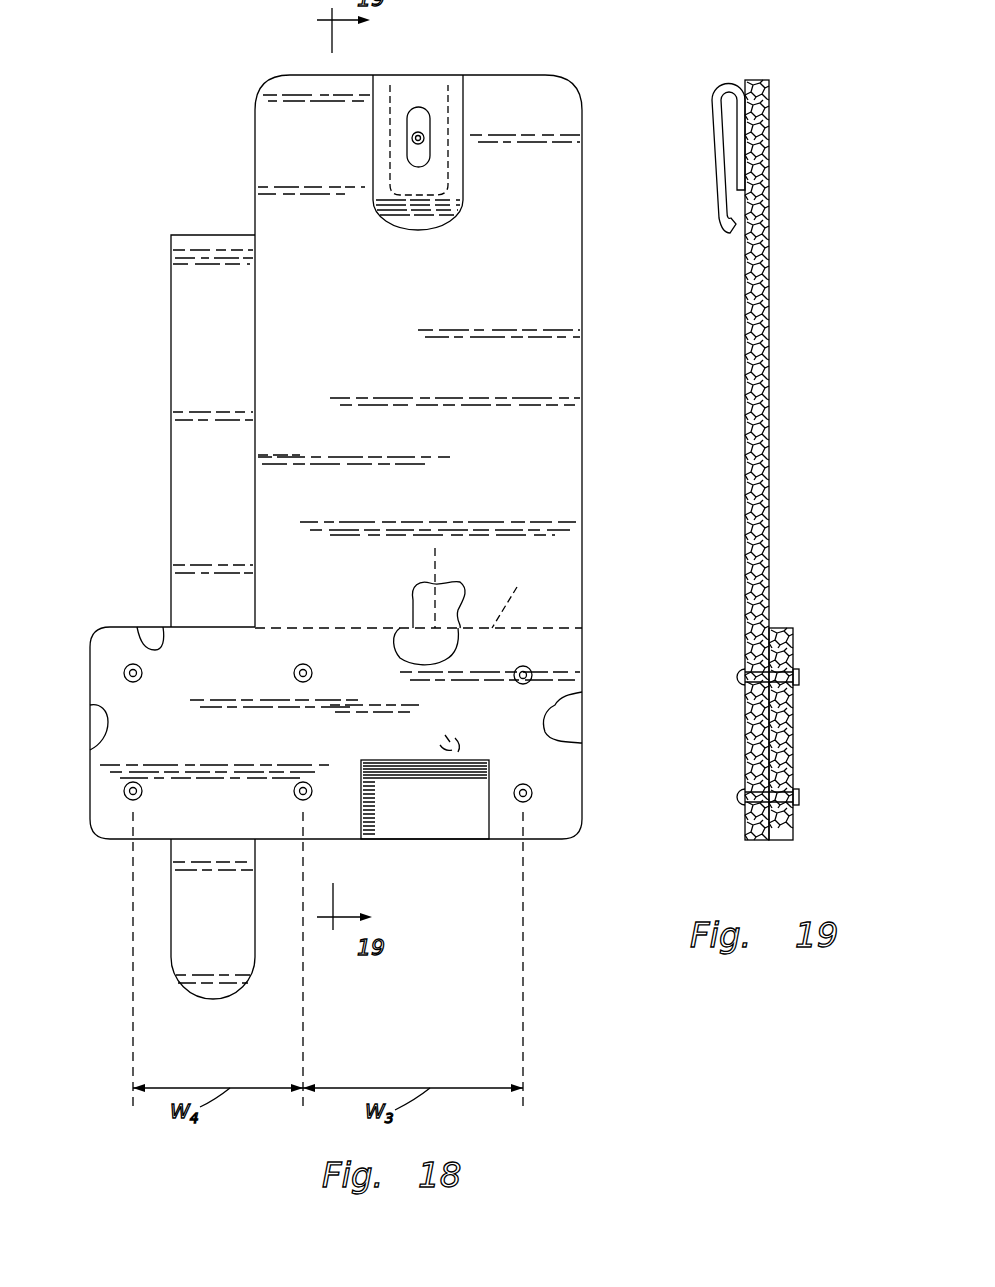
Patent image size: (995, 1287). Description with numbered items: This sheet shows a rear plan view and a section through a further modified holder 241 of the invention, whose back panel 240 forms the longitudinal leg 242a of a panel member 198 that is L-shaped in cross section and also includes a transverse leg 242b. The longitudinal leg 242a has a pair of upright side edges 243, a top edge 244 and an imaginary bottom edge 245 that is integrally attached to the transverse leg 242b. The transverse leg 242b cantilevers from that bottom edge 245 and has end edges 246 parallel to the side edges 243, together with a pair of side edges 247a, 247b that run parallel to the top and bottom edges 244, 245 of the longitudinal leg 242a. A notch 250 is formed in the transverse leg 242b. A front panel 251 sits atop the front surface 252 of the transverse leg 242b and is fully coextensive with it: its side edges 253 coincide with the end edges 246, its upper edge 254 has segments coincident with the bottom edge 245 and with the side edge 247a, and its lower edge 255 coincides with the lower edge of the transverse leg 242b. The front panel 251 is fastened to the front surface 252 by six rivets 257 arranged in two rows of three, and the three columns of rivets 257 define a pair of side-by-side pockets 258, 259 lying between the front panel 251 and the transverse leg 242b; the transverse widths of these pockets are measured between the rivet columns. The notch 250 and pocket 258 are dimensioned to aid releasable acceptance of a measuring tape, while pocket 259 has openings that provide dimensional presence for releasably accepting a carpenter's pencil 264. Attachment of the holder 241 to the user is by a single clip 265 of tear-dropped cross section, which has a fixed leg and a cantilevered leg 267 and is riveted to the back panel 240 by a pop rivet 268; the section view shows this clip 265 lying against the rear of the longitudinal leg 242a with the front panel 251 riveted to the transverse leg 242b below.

In FIG. 18, the panel member 198 is at (595, 827).
In FIG. 18, the back panel 240 is at (516, 74).
In FIG. 18, the modified holder 241 is at (598, 82).
In FIG. 18, the longitudinal leg 242a is at (584, 251).
In FIG. 19, the longitudinal leg 242a is at (772, 216).
In FIG. 18, the transverse leg 242b is at (100, 627).
In FIG. 19, the transverse leg 242b is at (745, 705).
In FIG. 18, the side edges 243 is at (255, 186).
In FIG. 18, the top edge 244 is at (300, 76).
In FIG. 18, the bottom edge 245 is at (375, 900).
In FIG. 19, the bottom edge 245 is at (770, 625).
In FIG. 18, the end edges 246 is at (90, 762).
In FIG. 18, the side edge 247a is at (207, 627).
In FIG. 18, the side edge 247b is at (122, 843).
In FIG. 18, the notch 250 is at (490, 803).
In FIG. 18, the front panel 251 is at (436, 646).
In FIG. 19, the front panel 251 is at (790, 846).
In FIG. 18, the front surface 252 is at (382, 758).
In FIG. 19, the front surface 252 is at (793, 652).
In FIG. 18, the side edges 253 is at (90, 712).
In FIG. 18, the upper edge 254 is at (147, 627).
In FIG. 18, the lower edge 255 is at (433, 843).
In FIG. 18, the rivets 257 is at (294, 672).
In FIG. 18, the pocket 258 is at (413, 620).
In FIG. 18, the pocket 259 is at (212, 846).
In FIG. 18, the carpenter's pencil 264 is at (171, 332).
In FIG. 18, the single clip 265 is at (376, 210).
In FIG. 18, the cantilevered leg 267 is at (425, 212).
In FIG. 18, the pop rivet 268 is at (419, 132).